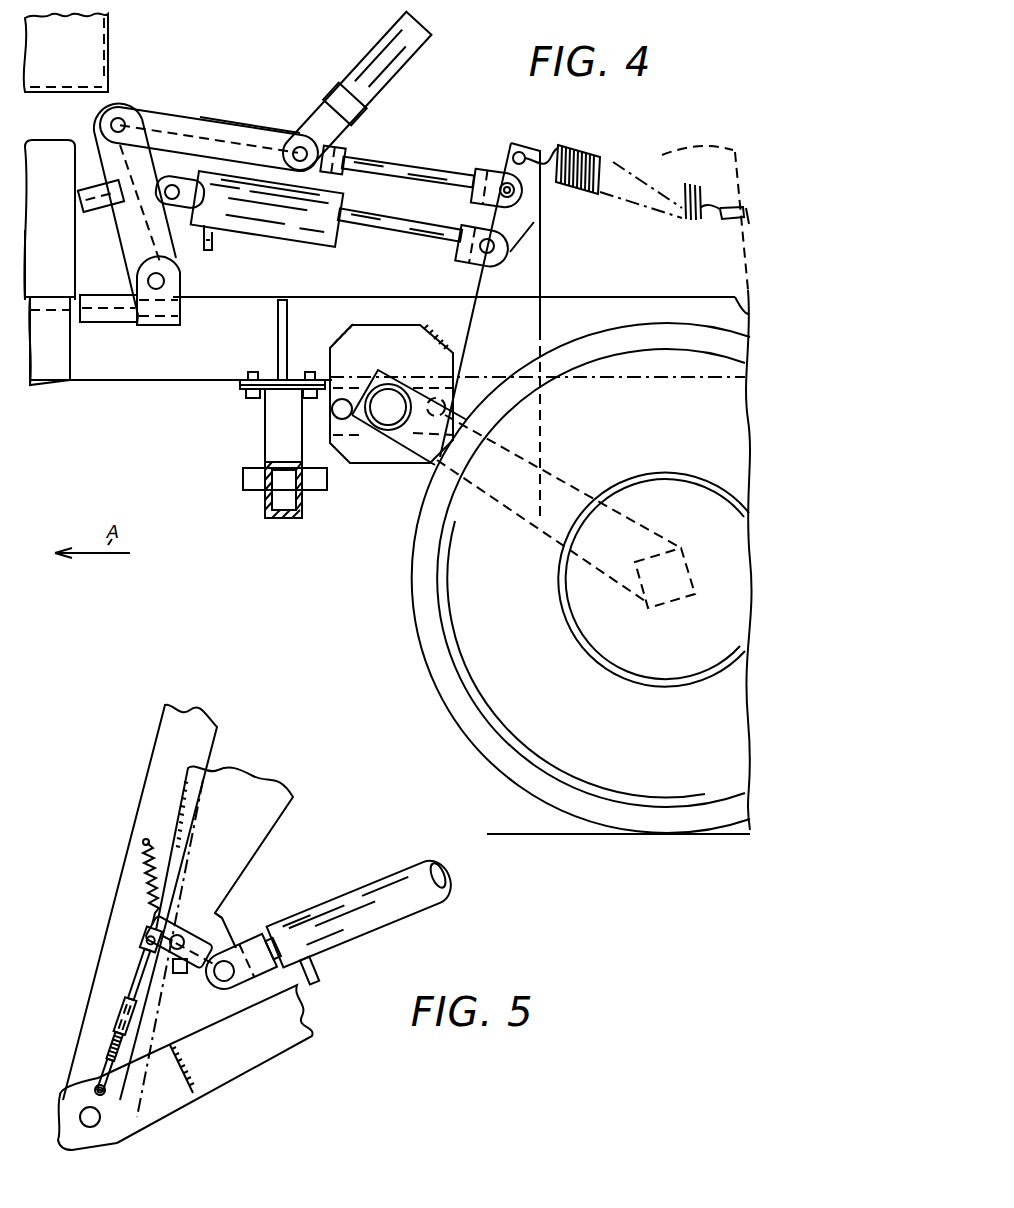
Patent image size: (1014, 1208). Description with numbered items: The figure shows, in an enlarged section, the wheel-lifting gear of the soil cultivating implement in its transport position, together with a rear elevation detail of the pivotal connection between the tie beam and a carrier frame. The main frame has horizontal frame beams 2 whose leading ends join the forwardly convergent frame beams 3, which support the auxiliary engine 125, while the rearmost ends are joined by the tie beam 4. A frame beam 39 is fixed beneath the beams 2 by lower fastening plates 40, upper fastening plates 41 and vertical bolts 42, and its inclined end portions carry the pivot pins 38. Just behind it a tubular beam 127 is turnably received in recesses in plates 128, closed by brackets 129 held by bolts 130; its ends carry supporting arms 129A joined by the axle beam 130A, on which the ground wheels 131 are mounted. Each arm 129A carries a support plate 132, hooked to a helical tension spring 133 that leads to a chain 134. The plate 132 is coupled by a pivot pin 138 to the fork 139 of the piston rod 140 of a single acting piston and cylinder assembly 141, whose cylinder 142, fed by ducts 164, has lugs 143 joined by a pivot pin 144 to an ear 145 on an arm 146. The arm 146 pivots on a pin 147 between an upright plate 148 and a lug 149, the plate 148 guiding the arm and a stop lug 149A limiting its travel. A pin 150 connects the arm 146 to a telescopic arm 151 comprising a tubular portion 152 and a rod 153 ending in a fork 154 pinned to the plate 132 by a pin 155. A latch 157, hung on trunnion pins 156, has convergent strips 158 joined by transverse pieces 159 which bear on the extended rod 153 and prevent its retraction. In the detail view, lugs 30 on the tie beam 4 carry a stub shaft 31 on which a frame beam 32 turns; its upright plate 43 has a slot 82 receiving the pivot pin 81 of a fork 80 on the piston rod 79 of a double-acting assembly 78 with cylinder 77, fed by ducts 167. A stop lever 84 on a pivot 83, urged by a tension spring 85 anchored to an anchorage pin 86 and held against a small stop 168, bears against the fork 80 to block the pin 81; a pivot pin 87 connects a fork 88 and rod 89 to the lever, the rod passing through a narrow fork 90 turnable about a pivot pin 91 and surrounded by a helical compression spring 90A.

In FIG. 4, the frame beam 2 is at (131, 382).
In FIG. 4, the frame beam 3 is at (50, 382).
In FIG. 5, the tie beam 4 is at (278, 1046).
In FIG. 5, the lugs 30 is at (162, 1096).
In FIG. 5, the stub shaft 31 is at (92, 1124).
In FIG. 5, the frame beam 32 is at (176, 714).
In FIG. 4, the pivot pin 38 is at (244, 478).
In FIG. 4, the frame beam 39 is at (268, 430).
In FIG. 4, the lower fastening plate 40 is at (242, 389).
In FIG. 4, the upper fastening plate 41 is at (240, 380).
In FIG. 4, the bolts 42 is at (255, 372).
In FIG. 5, the upright plate 43 is at (246, 794).
In FIG. 5, the cylinder 77 is at (415, 905).
In FIG. 5, the double-acting hydraulic piston and cylinder assembly 78 is at (390, 862).
In FIG. 5, the piston rod 79 is at (306, 933).
In FIG. 5, the fork 80 is at (255, 934).
In FIG. 5, the pivot pin 81 is at (228, 988).
In FIG. 5, the slot 82 is at (217, 930).
In FIG. 5, the pivot 83 is at (181, 935).
In FIG. 5, the stop lever 84 is at (168, 906).
In FIG. 5, the tension spring 85 is at (150, 875).
In FIG. 5, the anchorage pin 86 is at (144, 843).
In FIG. 5, the pivot pin 87 is at (147, 953).
In FIG. 5, the fork 88 is at (142, 958).
In FIG. 5, the rod 89 is at (134, 984).
In FIG. 5, the narrow fork 90 is at (122, 1018).
In FIG. 5, the helical compression spring 90A is at (112, 1052).
In FIG. 5, the pivot pin 91 is at (96, 1088).
In FIG. 4, the auxiliary engine 125 is at (36, 156).
In FIG. 4, the tubular beam 127 is at (394, 390).
In FIG. 4, the plates 128 is at (390, 326).
In FIG. 4, the brackets 129 is at (375, 456).
In FIG. 4, the supporting arms 129A is at (582, 496).
In FIG. 4, the bolts 130 is at (345, 400).
In FIG. 4, the axle beam 130A is at (666, 607).
In FIG. 4, the ground wheels 131 is at (473, 733).
In FIG. 4, the support plate 132 is at (543, 240).
In FIG. 4, the helical tension spring 133 is at (602, 164).
In FIG. 4, the chain 134 is at (724, 220).
In FIG. 4, the pivot pin 138 is at (532, 244).
In FIG. 4, the fork 139 is at (466, 256).
In FIG. 4, the piston rod 140 is at (400, 230).
In FIG. 4, the single acting piston and cylinder assembly 141 is at (276, 232).
In FIG. 4, the cylinder 142 is at (314, 236).
In FIG. 4, the lugs 143 is at (210, 200).
In FIG. 4, the pivot pin 144 is at (172, 184).
In FIG. 4, the ear 145 is at (136, 180).
In FIG. 4, the arm 146 is at (100, 144).
In FIG. 4, the pin 147 is at (147, 282).
In FIG. 4, the upright plate 148 is at (92, 252).
In FIG. 4, the lug 149 is at (162, 320).
In FIG. 4, the stop lug 149A is at (84, 202).
In FIG. 4, the pin 150 is at (118, 117).
In FIG. 4, the telescopic arm 151 is at (256, 120).
In FIG. 4, the tubular portion 152 is at (226, 128).
In FIG. 4, the rod 153 is at (380, 168).
In FIG. 4, the fork 154 is at (481, 175).
In FIG. 4, the pin 155 is at (522, 194).
In FIG. 4, the trunnion pins 156 is at (298, 147).
In FIG. 4, the latch 157 is at (413, 74).
In FIG. 4, the strips 158 is at (373, 84).
In FIG. 4, the transverse pieces 159 is at (340, 94).
In FIG. 4, the ducts 164 is at (212, 250).
In FIG. 5, the ducts 167 is at (314, 980).
In FIG. 5, the stop 168 is at (184, 973).